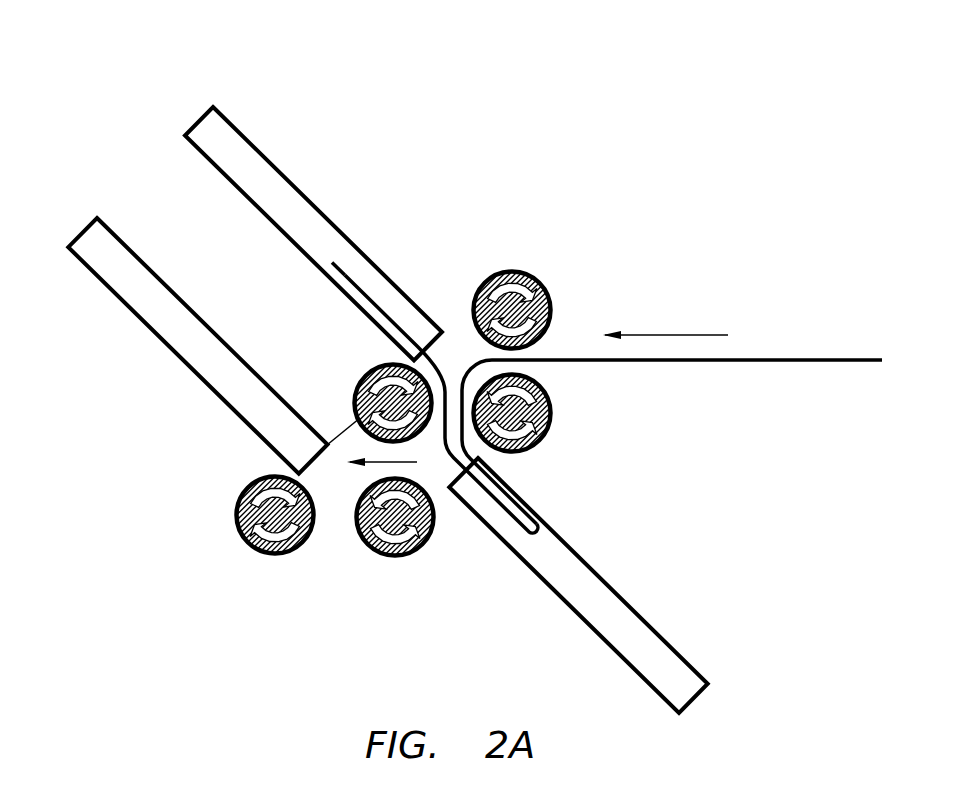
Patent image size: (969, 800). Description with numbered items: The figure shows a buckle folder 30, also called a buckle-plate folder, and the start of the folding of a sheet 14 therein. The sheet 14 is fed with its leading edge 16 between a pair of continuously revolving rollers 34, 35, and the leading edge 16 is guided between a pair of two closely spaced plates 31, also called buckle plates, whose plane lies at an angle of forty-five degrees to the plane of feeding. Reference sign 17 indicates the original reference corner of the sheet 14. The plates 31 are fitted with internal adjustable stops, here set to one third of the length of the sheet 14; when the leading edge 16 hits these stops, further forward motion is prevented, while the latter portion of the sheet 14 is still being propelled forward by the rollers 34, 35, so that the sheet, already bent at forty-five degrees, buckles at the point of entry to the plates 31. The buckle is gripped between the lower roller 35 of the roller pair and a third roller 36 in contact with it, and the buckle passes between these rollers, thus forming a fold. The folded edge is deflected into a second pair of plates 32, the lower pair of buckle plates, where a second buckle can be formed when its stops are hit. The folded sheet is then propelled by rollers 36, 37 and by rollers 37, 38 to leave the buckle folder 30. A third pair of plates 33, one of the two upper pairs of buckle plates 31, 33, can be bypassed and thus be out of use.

The buckle folder 30 is at (530, 109).
The first pair of buckle plates 31 is at (197, 126).
The second pair of plates 32 is at (695, 697).
The third pair of plates 33 is at (79, 234).
The upper roller 34 is at (537, 278).
The lower roller 35 is at (553, 420).
The third roller 36 is at (358, 378).
The fourth roller 37 is at (396, 557).
The fifth roller 38 is at (268, 556).
The sheet 14 is at (757, 361).
The leading edge 16 is at (333, 262).
The original reference corner 17 is at (332, 262).